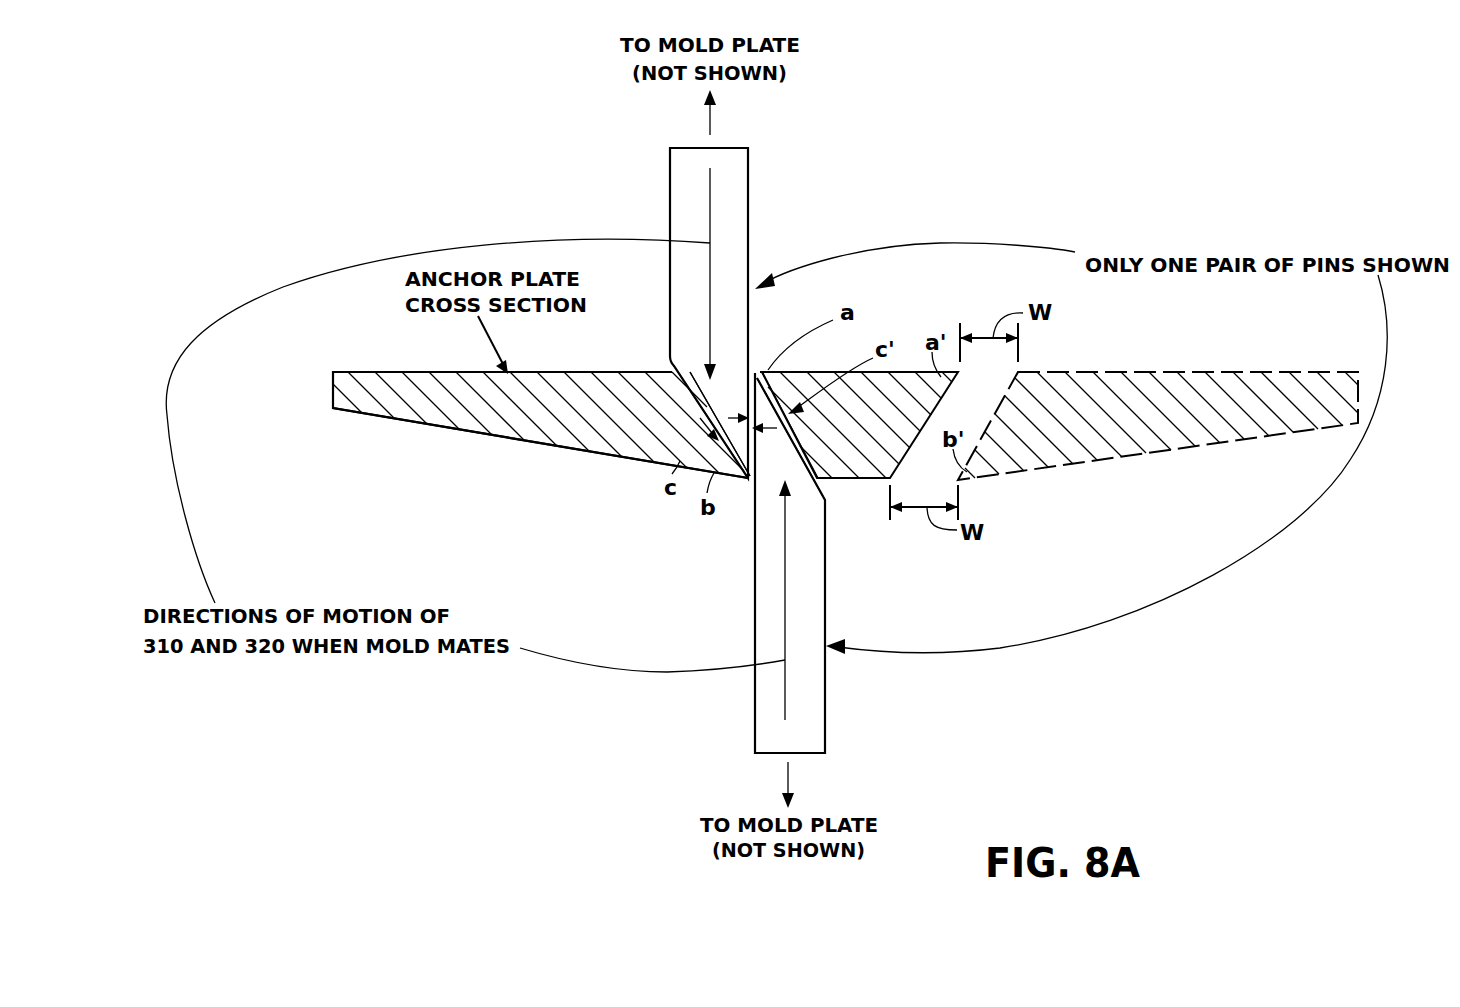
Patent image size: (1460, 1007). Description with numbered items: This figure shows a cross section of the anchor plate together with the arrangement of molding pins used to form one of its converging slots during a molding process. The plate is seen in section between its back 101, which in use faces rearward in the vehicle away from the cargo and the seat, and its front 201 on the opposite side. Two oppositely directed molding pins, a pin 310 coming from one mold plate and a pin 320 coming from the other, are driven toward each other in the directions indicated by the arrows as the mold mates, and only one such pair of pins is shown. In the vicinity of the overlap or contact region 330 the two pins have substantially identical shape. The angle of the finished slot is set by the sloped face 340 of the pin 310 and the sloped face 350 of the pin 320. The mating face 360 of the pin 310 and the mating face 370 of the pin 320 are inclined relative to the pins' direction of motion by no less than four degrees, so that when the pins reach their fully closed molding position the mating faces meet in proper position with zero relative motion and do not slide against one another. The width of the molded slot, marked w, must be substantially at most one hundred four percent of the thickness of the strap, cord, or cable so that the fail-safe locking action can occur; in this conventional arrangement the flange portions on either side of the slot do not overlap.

The back of anchor plate 101 is at (395, 356).
The front of anchor plate 201 is at (372, 460).
The pin 310 is at (738, 148).
The pin 320 is at (825, 733).
The overlap or contact region 330 is at (757, 374).
The sloped face of pin 340 is at (678, 380).
The sloped face of pin 350 is at (800, 437).
The mating face of pin 360 is at (752, 405).
The mating face of pin 370 is at (762, 447).